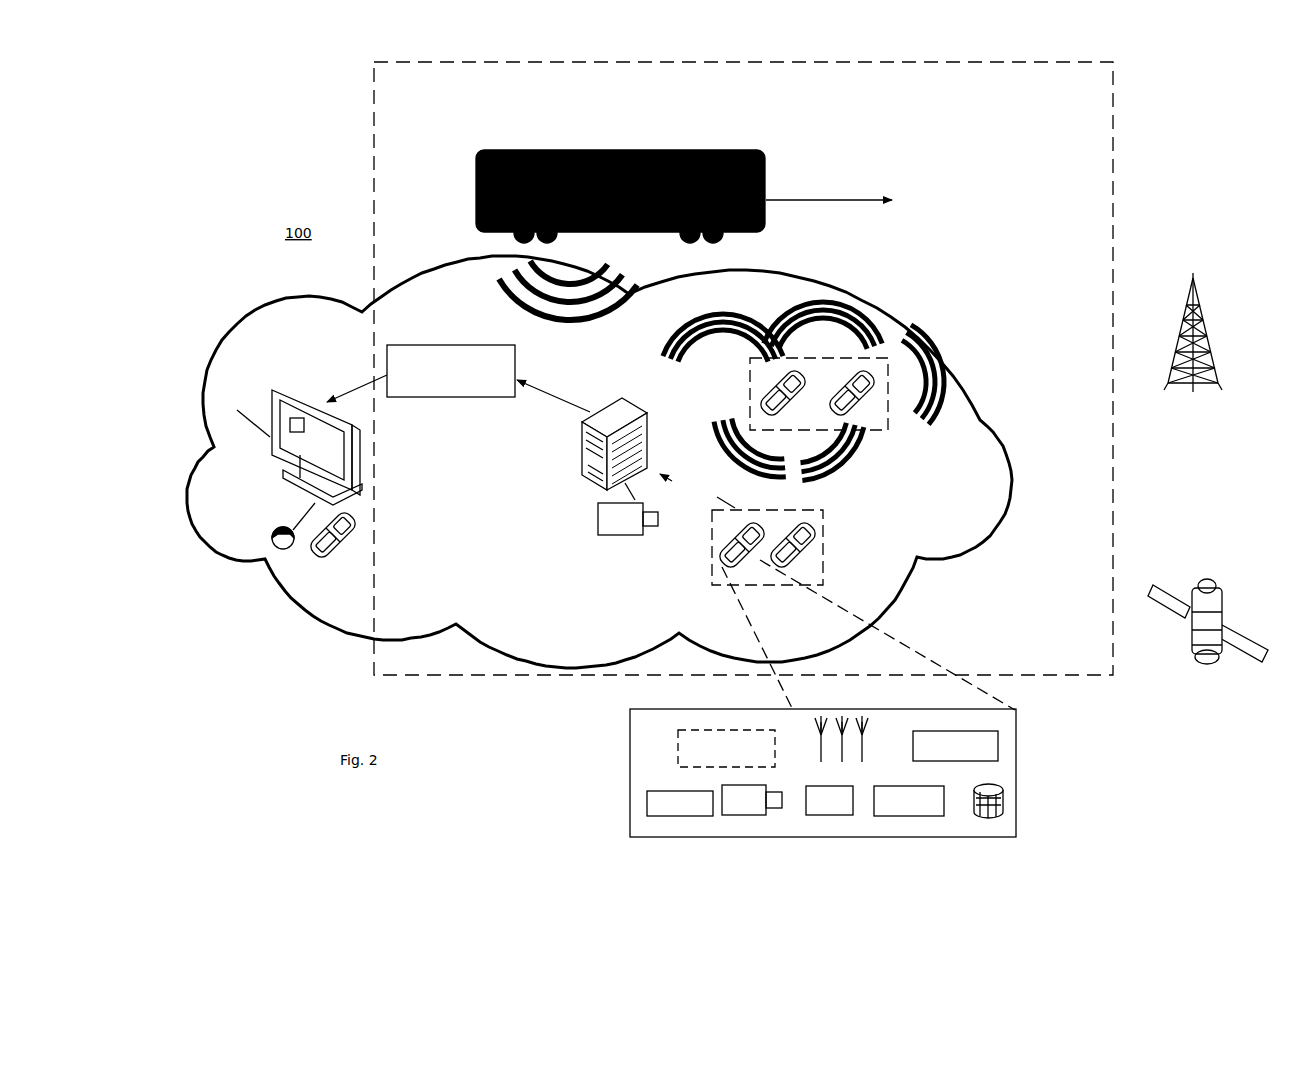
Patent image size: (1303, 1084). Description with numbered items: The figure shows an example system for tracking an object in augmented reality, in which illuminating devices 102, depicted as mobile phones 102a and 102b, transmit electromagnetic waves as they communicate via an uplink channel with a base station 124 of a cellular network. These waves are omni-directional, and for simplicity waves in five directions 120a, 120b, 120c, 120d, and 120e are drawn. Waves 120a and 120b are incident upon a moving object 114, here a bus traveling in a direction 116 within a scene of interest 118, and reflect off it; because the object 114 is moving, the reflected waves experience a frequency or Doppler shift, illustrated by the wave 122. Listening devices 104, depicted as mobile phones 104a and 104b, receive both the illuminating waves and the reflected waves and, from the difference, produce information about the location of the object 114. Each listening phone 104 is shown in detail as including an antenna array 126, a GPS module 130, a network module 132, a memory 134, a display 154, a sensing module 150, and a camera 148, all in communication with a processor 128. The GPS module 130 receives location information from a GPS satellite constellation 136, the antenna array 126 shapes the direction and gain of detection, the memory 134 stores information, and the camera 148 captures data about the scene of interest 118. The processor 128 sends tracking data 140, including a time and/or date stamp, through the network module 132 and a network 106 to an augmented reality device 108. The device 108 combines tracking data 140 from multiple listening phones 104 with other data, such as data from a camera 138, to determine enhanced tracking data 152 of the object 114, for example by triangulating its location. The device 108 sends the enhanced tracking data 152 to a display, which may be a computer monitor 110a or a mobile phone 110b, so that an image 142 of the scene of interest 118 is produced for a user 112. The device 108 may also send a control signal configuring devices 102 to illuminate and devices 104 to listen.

The illuminating device 102 is at (814, 383).
The illuminating device 102a is at (770, 388).
The illuminating device 102b is at (857, 377).
The listening device 104 is at (851, 683).
The listening device 104a is at (730, 533).
The listening device 104b is at (815, 532).
The network 106 is at (943, 303).
The augmented reality device 108 is at (592, 485).
The computer monitor 110a is at (235, 418).
The mobile phone 110b is at (332, 557).
The user 112 is at (268, 527).
The object 114 is at (630, 150).
The direction 116 is at (822, 198).
The scene of interest 118 is at (1106, 140).
The electromagnetic wave 120a is at (723, 310).
The electromagnetic wave 120b is at (847, 305).
The electromagnetic wave 120c is at (942, 367).
The electromagnetic wave 120d is at (873, 470).
The electromagnetic wave 120e is at (725, 418).
The wave 122 is at (553, 300).
The base station 124 is at (1213, 390).
The antenna array 126 is at (820, 742).
The processor 128 is at (990, 755).
The GPS module 130 is at (838, 818).
The network module 132 is at (883, 818).
The memory 134 is at (1003, 807).
The GPS satellite constellation 136 is at (1213, 678).
The camera 138 is at (628, 529).
The tracking data 140 is at (693, 470).
The image 142 is at (277, 407).
The camera 148 is at (753, 817).
The sensing module 150 is at (683, 758).
The enhanced tracking data 152 is at (467, 398).
The display 154 is at (678, 817).